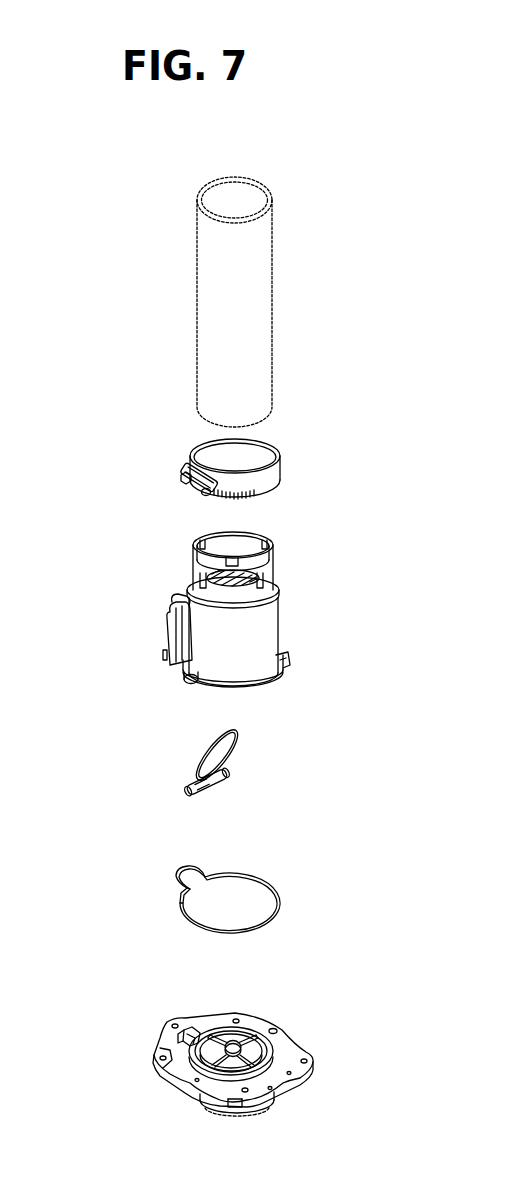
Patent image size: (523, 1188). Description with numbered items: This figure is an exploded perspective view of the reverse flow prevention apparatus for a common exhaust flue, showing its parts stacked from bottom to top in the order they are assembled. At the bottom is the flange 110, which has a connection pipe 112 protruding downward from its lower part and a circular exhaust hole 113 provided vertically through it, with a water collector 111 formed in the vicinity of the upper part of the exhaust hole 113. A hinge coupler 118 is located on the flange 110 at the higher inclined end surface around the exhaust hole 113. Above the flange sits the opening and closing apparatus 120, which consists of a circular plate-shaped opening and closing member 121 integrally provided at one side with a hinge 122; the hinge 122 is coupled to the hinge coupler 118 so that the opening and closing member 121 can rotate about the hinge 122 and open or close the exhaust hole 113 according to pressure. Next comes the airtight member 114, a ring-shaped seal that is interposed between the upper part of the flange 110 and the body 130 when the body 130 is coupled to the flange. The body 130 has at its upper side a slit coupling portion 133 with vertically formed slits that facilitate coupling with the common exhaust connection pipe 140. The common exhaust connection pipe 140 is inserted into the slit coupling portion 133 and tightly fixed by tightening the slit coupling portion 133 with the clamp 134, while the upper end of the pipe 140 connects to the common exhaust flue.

The common exhaust connection pipe 140 is at (218, 286).
The clamp 134 is at (192, 460).
The slit coupling portion 133 is at (194, 549).
The body 130 is at (200, 621).
The opening and closing apparatus 120 is at (110, 722).
The opening and closing member 121 is at (206, 748).
The hinge 122 is at (190, 786).
The airtight member 114 is at (174, 894).
The flange 110 is at (160, 1060).
The hinge coupler 118 is at (172, 1026).
The water collector 111 is at (212, 1032).
The exhaust hole 113 is at (274, 1020).
The connection pipe 112 is at (200, 1108).